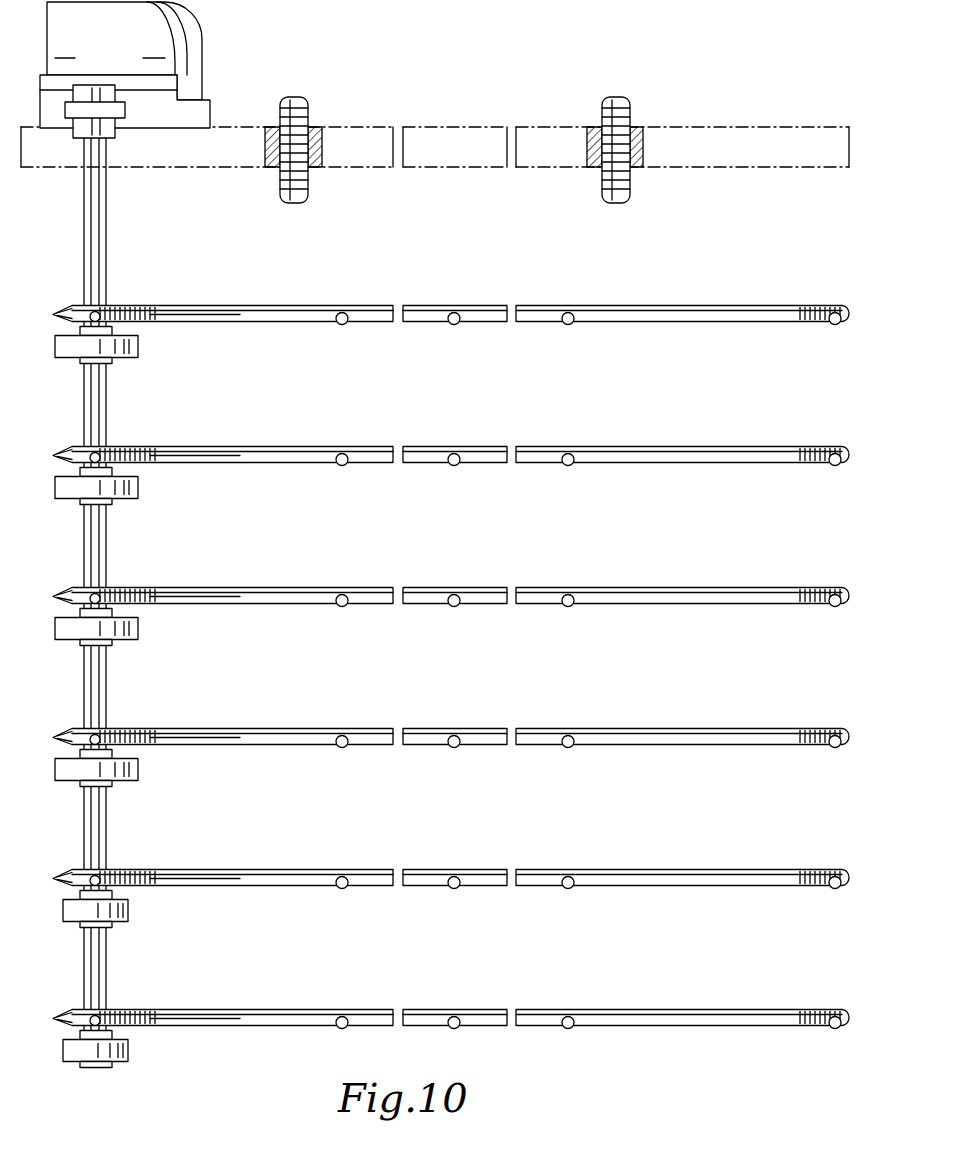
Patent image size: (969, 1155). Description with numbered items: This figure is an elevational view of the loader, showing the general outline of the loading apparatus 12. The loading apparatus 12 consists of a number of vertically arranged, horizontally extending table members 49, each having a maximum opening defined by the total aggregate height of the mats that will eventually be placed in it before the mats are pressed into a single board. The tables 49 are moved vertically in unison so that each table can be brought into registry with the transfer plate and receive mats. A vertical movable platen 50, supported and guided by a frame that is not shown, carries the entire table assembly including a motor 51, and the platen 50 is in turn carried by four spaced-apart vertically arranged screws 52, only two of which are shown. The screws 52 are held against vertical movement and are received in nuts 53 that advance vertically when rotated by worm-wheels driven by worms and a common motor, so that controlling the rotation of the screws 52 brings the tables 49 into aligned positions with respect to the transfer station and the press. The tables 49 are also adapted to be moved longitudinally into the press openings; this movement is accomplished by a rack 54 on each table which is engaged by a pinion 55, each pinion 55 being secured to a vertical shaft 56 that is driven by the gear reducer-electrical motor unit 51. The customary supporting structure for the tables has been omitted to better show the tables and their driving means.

The loading apparatus 12 is at (548, 117).
The table members 49 is at (553, 588).
The vertical movable platen 50 is at (450, 130).
The motor 51 is at (200, 20).
The screws 52 is at (308, 185).
The nuts 53 is at (315, 127).
The rack 54 is at (277, 317).
The pinion 55 is at (100, 597).
The vertical shaft 56 is at (106, 830).